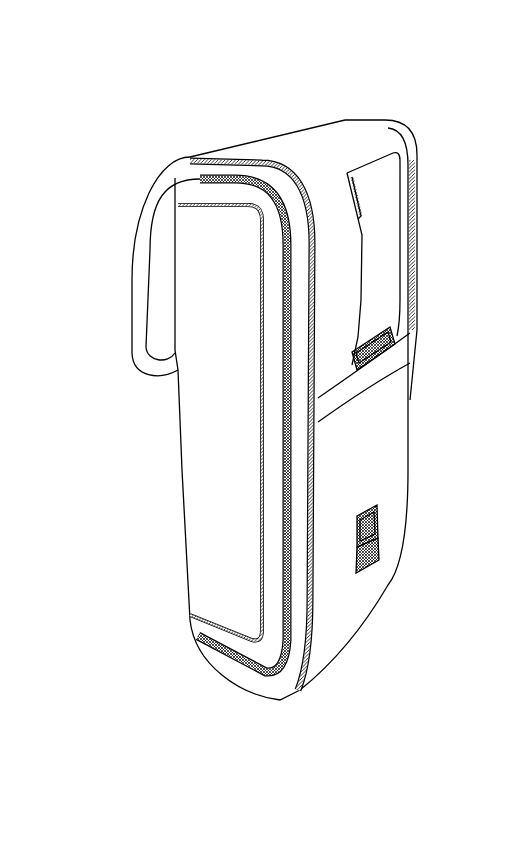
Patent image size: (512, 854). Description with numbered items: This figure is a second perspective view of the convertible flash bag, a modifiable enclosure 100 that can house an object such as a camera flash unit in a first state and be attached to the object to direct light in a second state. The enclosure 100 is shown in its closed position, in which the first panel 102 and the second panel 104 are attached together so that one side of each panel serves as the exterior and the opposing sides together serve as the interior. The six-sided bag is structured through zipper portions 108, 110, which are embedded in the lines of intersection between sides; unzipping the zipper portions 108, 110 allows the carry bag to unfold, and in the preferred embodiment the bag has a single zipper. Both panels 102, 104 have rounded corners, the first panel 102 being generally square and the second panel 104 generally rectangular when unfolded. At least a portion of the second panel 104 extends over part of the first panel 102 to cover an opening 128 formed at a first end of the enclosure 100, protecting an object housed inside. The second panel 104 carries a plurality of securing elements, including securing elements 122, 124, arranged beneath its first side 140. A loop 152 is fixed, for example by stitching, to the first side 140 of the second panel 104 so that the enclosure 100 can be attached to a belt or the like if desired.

The enclosure 100 is at (138, 662).
The first panel 102 is at (203, 467).
The second panel 104 is at (333, 613).
The zipper portion 108 is at (287, 535).
The zipper portion 110 is at (242, 425).
The securing element 122 is at (380, 520).
The securing element 124 is at (373, 562).
The opening 128 is at (205, 175).
The first side of the second panel 140 is at (332, 166).
The loop 152 is at (382, 282).